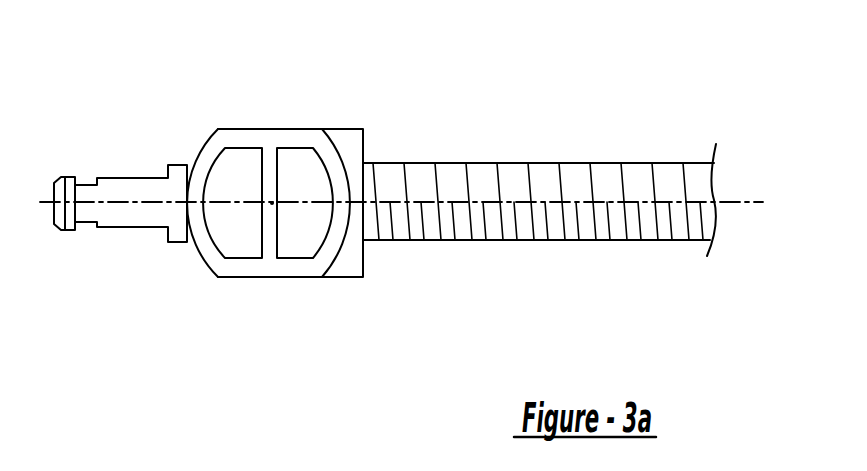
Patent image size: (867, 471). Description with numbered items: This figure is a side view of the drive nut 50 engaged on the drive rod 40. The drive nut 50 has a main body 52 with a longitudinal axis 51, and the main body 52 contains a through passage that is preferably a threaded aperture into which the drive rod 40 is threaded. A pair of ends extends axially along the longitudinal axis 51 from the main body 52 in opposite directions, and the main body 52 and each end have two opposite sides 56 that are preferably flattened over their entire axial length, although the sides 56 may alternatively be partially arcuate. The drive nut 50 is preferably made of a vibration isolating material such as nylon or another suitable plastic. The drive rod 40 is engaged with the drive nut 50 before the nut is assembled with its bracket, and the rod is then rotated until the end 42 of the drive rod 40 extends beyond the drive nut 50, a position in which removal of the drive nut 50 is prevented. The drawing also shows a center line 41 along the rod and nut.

The drive rod 40 is at (553, 163).
The longitudinal axis 41 is at (761, 200).
The end 42 is at (65, 231).
The drive nut 50 is at (314, 190).
The longitudinal axis 51 is at (272, 203).
The main body 52 is at (343, 278).
The sides 56 is at (280, 129).